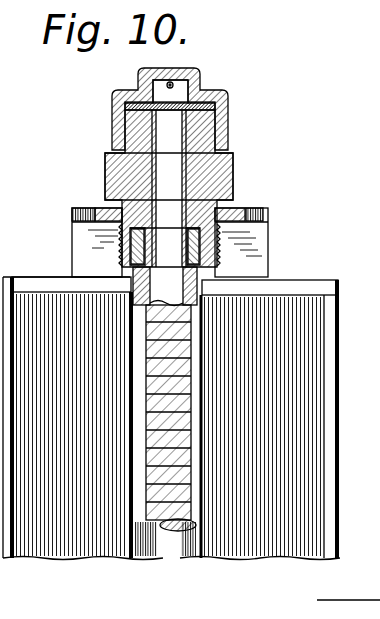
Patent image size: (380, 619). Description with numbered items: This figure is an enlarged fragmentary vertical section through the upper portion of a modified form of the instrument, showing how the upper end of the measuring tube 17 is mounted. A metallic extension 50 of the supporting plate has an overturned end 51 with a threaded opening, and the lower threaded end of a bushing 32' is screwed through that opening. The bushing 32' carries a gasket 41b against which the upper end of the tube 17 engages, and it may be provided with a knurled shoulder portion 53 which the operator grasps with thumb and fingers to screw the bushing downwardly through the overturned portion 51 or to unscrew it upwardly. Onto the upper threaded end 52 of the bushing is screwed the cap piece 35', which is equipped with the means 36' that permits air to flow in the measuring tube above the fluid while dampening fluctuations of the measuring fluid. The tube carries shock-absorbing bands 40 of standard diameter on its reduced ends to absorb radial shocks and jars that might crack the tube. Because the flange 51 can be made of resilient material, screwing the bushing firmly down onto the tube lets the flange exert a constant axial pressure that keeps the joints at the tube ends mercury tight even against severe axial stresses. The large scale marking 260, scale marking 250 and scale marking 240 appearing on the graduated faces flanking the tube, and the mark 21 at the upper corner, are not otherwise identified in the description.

The upper threaded end of the bushing 52 is at (230, 127).
The air flow and dampening means 36' is at (201, 80).
The cap piece 35' is at (191, 93).
The bushing 32' is at (145, 188).
The knurled shoulder portion 53 is at (104, 163).
The gasket 41b is at (205, 232).
The tube 17 is at (188, 276).
The shock-absorbing bands 40 is at (217, 268).
The metallic extension of the supporting plate 50 is at (245, 258).
The overturned end 51 is at (234, 212).
The compartment 260 is at (83, 418).
The compartment 240 is at (72, 487).
The compartment 250 is at (280, 440).
The sheet mark 21 is at (371, 35).